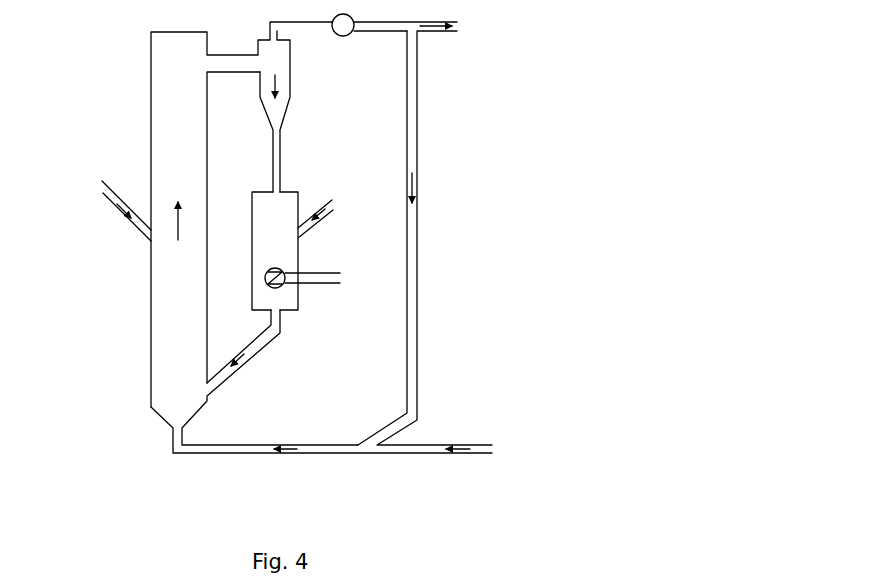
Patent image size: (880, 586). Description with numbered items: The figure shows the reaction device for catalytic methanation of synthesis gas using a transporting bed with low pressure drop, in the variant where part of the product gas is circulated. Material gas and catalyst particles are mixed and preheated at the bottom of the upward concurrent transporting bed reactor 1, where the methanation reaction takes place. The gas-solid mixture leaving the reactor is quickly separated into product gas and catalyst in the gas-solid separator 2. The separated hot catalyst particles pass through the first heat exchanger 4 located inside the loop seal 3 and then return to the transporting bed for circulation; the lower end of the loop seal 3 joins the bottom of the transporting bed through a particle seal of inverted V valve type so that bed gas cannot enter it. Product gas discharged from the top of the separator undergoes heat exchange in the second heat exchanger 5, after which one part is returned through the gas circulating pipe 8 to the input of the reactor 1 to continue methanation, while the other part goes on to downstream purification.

The upward concurrent transporting bed reactor 1 is at (167, 270).
The gas-solid separator 2 is at (270, 68).
The loop seal 3 is at (293, 305).
The first heat exchanger 4 is at (308, 285).
The second heat exchanger 5 is at (394, 37).
The gas circulating pipe 8 is at (417, 222).